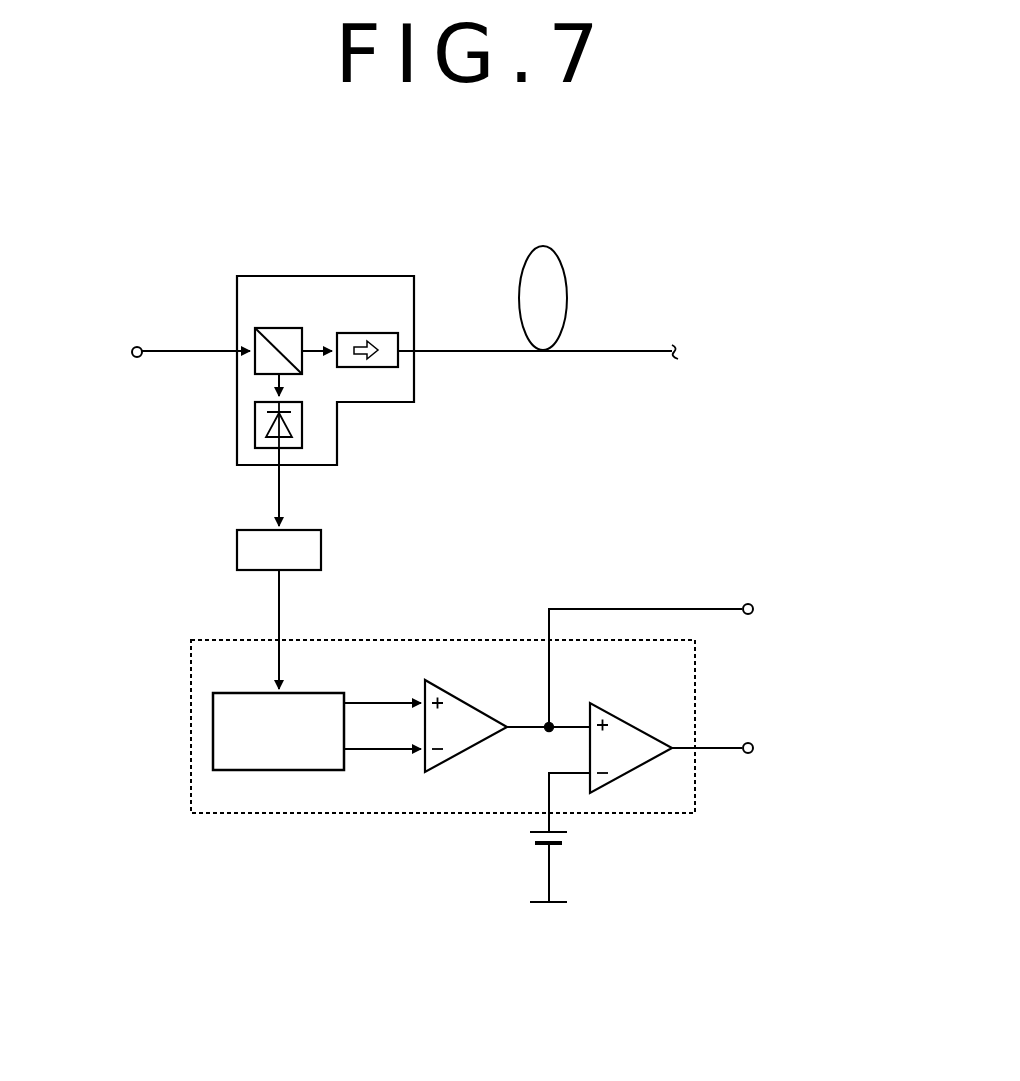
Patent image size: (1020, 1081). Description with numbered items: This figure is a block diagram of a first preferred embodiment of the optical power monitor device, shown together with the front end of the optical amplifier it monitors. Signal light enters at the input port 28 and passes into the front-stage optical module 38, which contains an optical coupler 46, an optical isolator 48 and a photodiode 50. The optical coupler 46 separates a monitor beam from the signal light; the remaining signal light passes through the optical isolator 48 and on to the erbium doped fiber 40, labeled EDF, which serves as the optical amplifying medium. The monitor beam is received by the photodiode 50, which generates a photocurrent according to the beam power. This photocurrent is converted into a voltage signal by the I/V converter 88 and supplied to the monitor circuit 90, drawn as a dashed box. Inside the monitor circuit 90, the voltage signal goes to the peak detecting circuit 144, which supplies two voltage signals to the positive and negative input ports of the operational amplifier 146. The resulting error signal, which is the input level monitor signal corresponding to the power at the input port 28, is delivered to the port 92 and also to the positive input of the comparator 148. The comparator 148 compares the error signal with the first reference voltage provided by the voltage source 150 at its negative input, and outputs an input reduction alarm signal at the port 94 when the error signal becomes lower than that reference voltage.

The input port 28 is at (137, 347).
The front-stage optical module 38 is at (322, 276).
The erbium doped fiber (EDF) 40 is at (545, 245).
The optical coupler 46 is at (278, 328).
The optical isolator 48 is at (365, 333).
The photodiode 50 is at (255, 430).
The I/V converter 88 is at (237, 555).
The monitor circuit 90 is at (409, 636).
The port 92 is at (747, 603).
The port 94 is at (748, 754).
The peak detecting circuit 144 is at (281, 770).
The operational amplifier 146 is at (487, 712).
The comparator 148 is at (645, 732).
The voltage source 150 is at (521, 839).